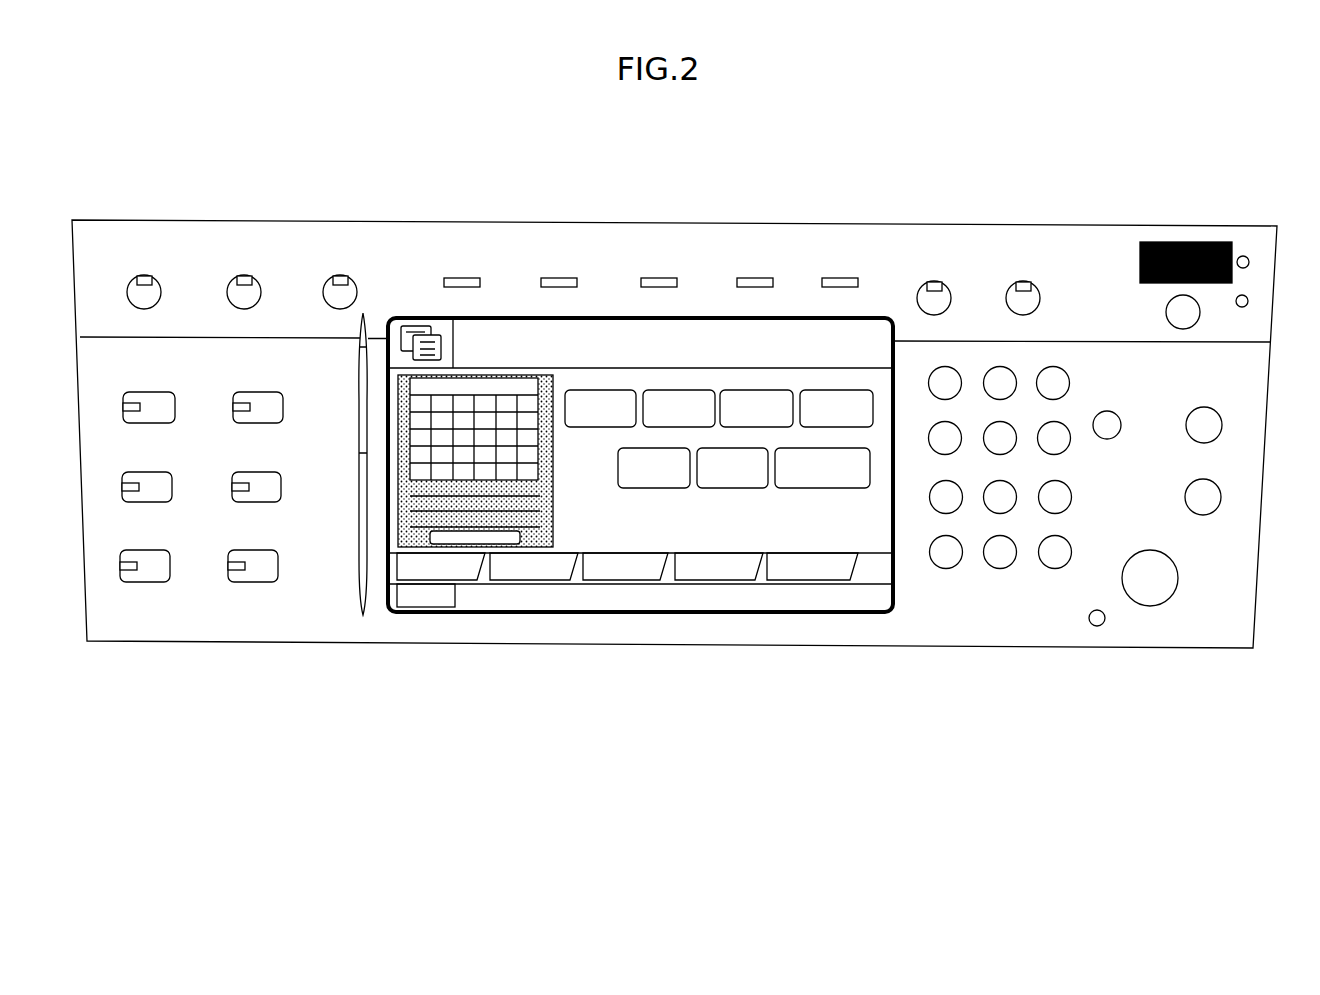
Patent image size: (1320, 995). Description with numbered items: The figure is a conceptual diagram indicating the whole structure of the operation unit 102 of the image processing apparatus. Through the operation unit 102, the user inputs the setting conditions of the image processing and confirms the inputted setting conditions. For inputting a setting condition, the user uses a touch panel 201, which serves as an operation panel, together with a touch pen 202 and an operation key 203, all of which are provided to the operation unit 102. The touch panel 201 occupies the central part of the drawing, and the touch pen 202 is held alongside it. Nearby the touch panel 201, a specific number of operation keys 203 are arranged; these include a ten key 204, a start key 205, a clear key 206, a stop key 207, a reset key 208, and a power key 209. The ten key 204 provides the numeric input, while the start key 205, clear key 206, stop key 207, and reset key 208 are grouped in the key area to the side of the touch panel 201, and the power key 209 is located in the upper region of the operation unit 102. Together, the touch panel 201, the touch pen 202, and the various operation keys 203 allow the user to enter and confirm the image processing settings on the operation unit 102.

The operation unit 102 is at (693, 472).
The touch panel 201 is at (486, 632).
The touch pen 202 is at (362, 614).
The operation key 203 is at (1067, 545).
The ten key 204 is at (992, 592).
The start key 205 is at (1150, 590).
The clear key 206 is at (1100, 440).
The stop key 207 is at (1205, 503).
The reset key 208 is at (1205, 433).
The power key 209 is at (1192, 318).